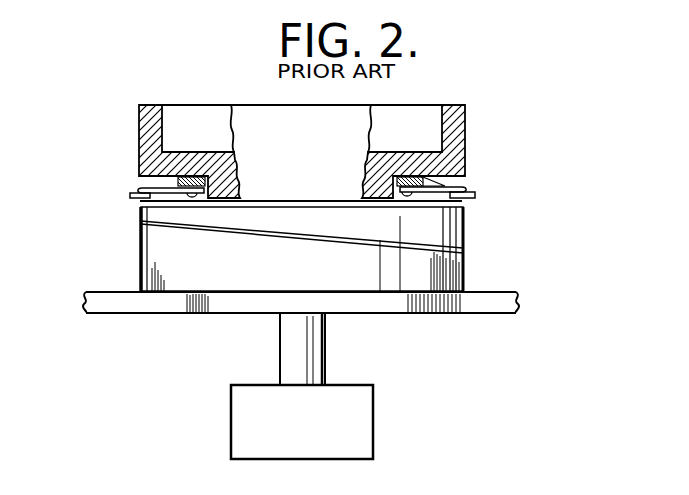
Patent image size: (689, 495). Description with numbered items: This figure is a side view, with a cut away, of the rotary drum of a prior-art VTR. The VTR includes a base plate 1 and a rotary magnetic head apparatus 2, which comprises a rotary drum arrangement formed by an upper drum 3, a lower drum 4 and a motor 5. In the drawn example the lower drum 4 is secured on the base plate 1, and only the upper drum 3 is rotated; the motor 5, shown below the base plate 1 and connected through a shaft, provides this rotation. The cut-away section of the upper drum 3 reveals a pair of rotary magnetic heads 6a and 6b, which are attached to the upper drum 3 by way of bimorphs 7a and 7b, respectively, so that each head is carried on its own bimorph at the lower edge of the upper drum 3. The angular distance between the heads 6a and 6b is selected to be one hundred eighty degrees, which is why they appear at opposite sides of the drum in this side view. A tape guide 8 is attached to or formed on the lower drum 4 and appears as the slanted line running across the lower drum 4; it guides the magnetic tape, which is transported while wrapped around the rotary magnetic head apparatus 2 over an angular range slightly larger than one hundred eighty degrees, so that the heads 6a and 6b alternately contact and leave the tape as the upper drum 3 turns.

The base plate 1 is at (466, 306).
The rotary magnetic head apparatus 2 is at (100, 144).
The upper drum 3 is at (458, 124).
The lower drum 4 is at (458, 228).
The motor 5 is at (373, 412).
The rotary magnetic head 6a is at (135, 199).
The rotary magnetic head 6b is at (470, 198).
The bimorph 7a is at (143, 186).
The bimorph 7b is at (462, 178).
The tape guide 8 is at (398, 238).